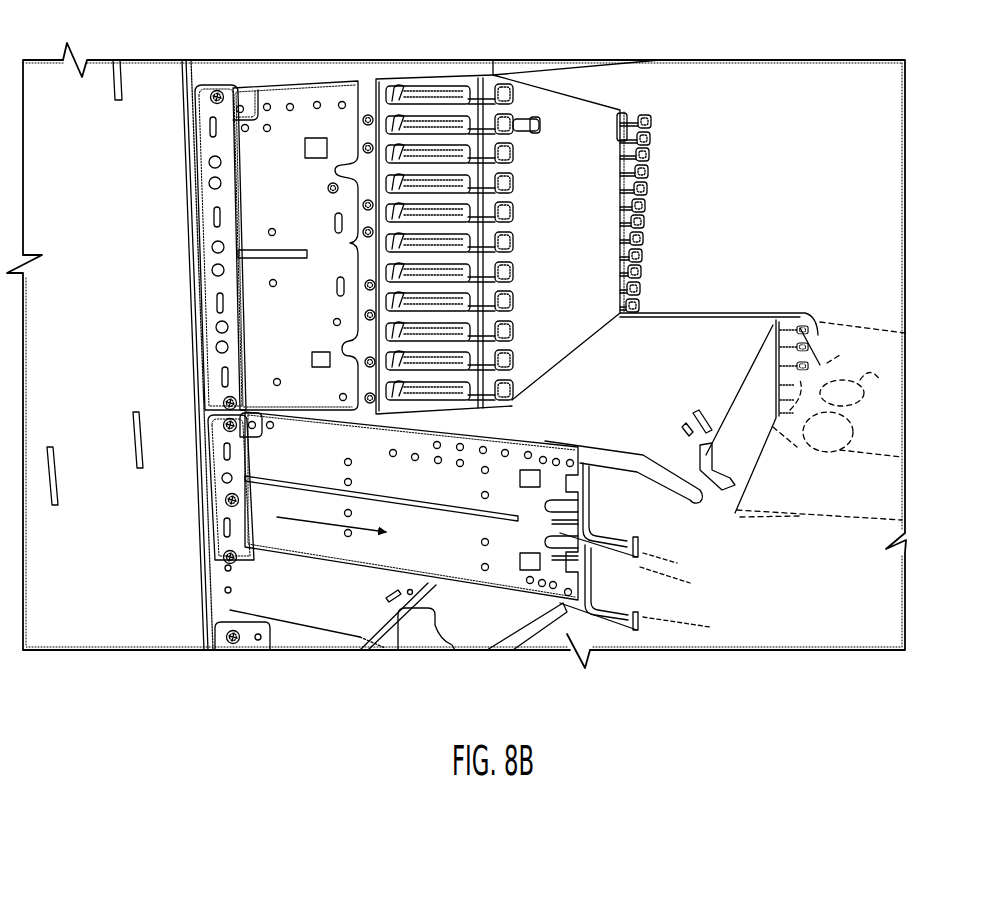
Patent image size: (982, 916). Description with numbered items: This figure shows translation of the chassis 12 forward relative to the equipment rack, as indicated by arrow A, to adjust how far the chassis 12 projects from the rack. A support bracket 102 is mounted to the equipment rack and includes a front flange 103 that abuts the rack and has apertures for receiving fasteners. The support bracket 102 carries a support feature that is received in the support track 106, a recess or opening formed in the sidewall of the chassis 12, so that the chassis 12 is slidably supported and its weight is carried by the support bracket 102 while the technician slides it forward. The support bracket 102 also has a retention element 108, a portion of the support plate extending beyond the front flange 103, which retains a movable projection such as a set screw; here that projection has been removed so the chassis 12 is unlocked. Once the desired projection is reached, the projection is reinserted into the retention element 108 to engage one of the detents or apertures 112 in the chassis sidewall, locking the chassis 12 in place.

The chassis 12 is at (586, 231).
The support bracket 102 is at (189, 346).
The front flange 103 is at (202, 233).
The support track 106 is at (282, 262).
The retention element 108 is at (235, 101).
The detents or apertures 112 is at (299, 103).